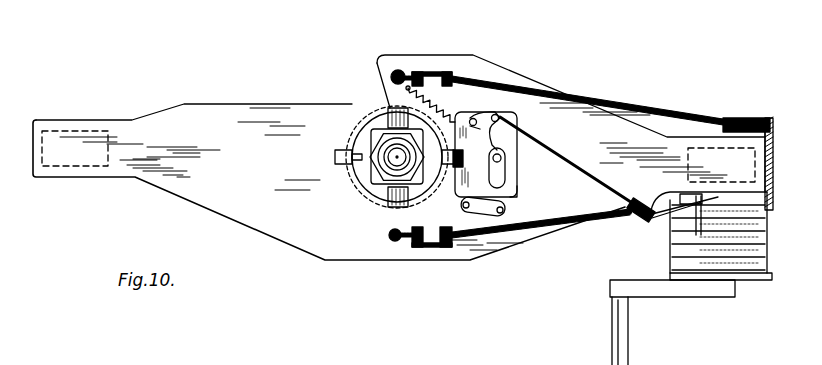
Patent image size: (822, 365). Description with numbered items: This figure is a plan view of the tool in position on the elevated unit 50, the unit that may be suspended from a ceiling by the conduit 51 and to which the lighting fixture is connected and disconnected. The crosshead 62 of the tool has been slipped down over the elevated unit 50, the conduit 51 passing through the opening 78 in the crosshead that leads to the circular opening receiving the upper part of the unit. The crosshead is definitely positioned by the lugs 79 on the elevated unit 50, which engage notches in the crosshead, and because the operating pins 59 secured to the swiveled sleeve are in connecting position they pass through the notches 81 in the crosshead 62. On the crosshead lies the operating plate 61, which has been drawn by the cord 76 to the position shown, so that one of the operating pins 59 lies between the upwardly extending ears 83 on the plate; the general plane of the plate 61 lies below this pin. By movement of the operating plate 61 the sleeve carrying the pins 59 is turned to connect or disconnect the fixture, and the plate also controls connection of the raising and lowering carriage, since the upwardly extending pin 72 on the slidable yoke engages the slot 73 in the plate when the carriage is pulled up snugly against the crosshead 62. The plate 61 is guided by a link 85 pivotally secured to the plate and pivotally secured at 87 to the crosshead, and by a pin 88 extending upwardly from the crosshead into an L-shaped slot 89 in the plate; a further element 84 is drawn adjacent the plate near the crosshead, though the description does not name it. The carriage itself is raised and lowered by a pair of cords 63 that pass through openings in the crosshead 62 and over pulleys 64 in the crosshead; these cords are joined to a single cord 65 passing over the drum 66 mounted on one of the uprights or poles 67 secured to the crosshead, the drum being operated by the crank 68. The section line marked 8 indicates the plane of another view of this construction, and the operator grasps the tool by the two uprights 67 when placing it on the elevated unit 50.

The section line 8- 8 is at (400, 108).
The elevated unit 50 is at (378, 120).
The conduit 51 is at (389, 198).
The pins 59 is at (436, 182).
The operating plate 61 is at (575, 178).
The crosshead 62 is at (298, 258).
The cords 63 is at (652, 110).
The pulleys 64 is at (748, 122).
The single cord 65 is at (745, 268).
The drum 66 is at (720, 280).
The uprights or poles 67 is at (99, 130).
The crank 68 is at (648, 290).
The pin 72 is at (517, 190).
The slot 73 is at (505, 160).
The cord 76 is at (605, 208).
The opening 78 is at (358, 128).
The lugs 79 is at (394, 110).
The notches 81 is at (335, 155).
The ears 83 is at (478, 120).
The pin 84 is at (404, 76).
The link 85 is at (488, 215).
The pivot 87 is at (503, 209).
The pin 88 is at (460, 96).
The L-shaped slot 89 is at (497, 112).